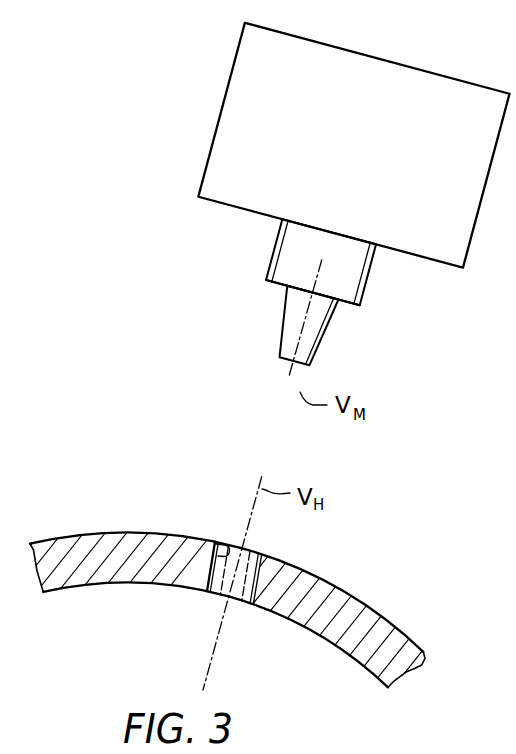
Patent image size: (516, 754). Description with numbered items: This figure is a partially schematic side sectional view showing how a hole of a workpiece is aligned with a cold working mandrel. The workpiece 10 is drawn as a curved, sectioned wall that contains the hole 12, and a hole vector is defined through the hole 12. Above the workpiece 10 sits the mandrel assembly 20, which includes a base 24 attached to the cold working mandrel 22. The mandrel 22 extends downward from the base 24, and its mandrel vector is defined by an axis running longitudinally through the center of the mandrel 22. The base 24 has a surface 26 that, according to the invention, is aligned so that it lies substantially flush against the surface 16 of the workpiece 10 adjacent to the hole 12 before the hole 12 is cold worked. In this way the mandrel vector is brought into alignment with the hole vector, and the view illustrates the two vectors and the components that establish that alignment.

The mandrel assembly 20 is at (156, 180).
The cold working mandrel 22 is at (327, 335).
The base 24 is at (368, 285).
The surface 26 is at (273, 298).
The workpiece 10 is at (105, 577).
The hole 12 is at (232, 548).
The surface 16 is at (290, 557).